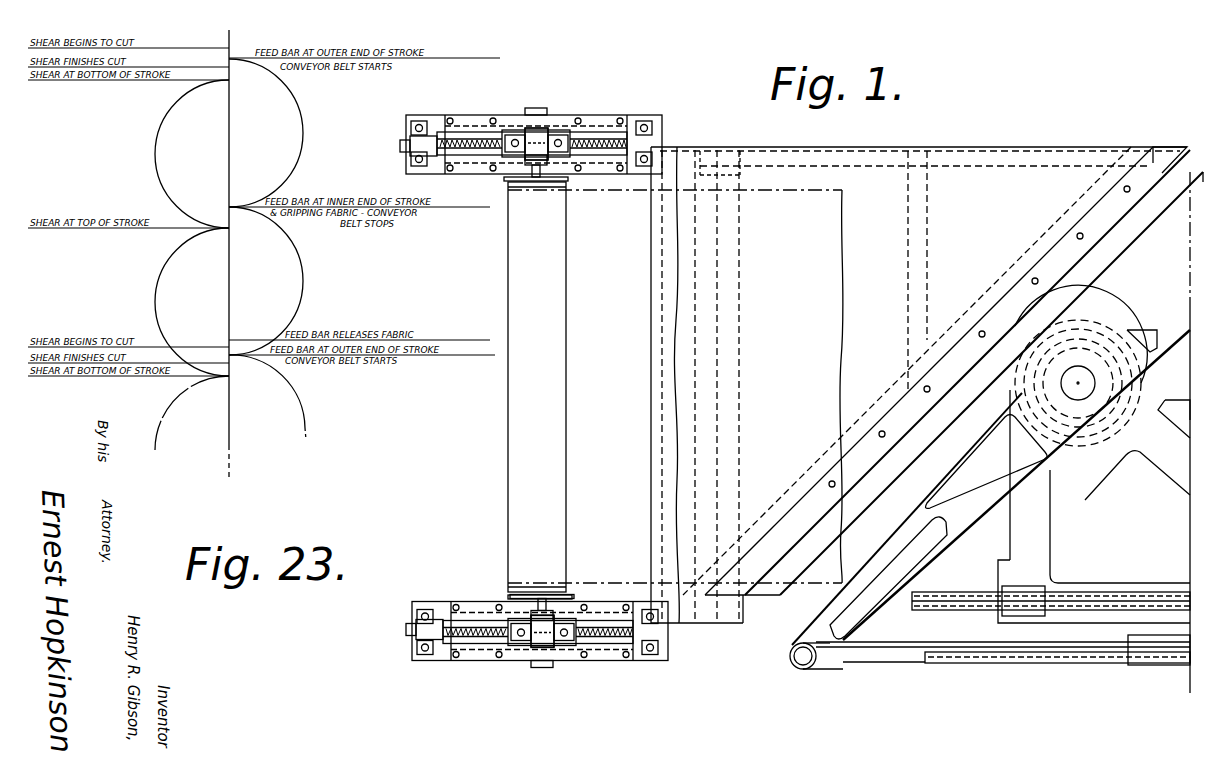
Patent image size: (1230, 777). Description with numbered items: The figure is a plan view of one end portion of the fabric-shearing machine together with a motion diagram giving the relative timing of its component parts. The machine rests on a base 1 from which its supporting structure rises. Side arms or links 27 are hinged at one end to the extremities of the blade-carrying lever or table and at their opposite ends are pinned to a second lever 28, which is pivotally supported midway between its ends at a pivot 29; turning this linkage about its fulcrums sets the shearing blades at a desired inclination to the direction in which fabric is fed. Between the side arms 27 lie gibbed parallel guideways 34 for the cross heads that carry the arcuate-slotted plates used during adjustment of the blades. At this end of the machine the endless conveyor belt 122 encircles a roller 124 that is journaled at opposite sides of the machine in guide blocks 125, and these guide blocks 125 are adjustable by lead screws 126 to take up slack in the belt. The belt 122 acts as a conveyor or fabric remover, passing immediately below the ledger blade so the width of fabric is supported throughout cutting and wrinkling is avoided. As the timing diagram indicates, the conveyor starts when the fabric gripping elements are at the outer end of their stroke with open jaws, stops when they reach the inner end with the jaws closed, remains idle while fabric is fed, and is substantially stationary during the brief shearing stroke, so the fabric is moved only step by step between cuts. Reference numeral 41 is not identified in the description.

The base 1 is at (1016, 535).
The links 27 is at (890, 662).
The second lever 28 is at (955, 466).
The pivot 29 is at (1080, 400).
The parallel guideways 34 is at (1128, 598).
The bar 41 is at (1066, 661).
The belt 122 is at (613, 186).
The roller 124 is at (560, 384).
The guide blocks 125 is at (540, 138).
The lead screws 126 is at (470, 140).